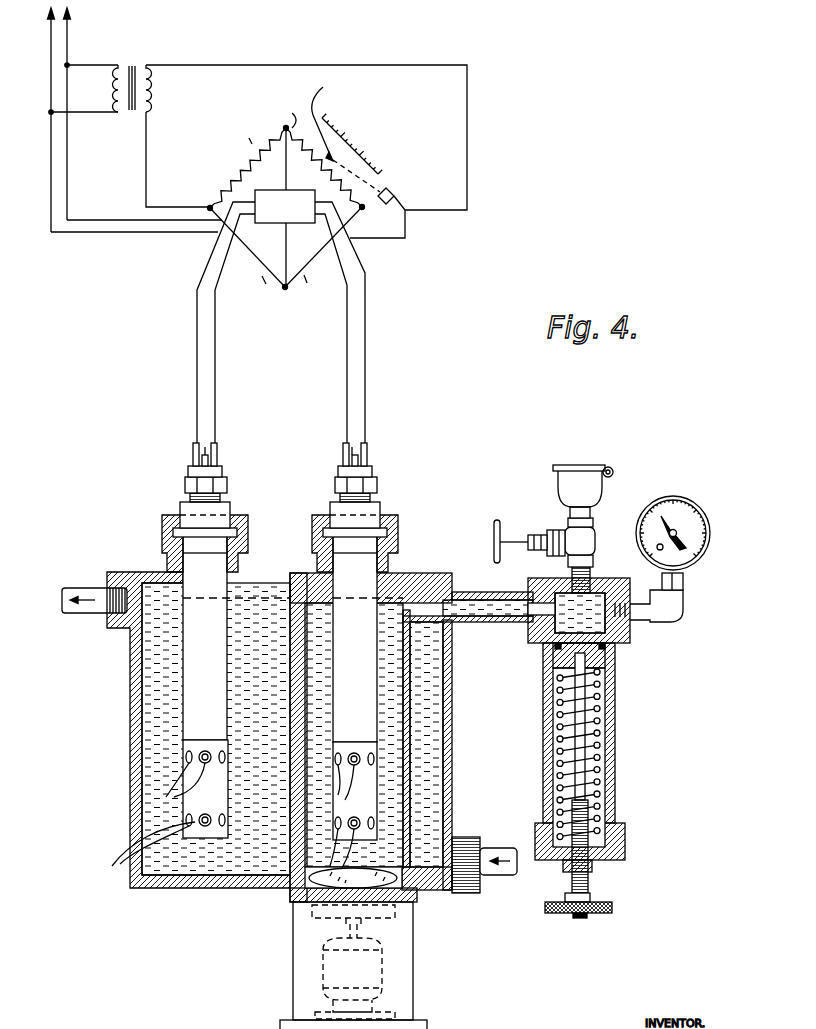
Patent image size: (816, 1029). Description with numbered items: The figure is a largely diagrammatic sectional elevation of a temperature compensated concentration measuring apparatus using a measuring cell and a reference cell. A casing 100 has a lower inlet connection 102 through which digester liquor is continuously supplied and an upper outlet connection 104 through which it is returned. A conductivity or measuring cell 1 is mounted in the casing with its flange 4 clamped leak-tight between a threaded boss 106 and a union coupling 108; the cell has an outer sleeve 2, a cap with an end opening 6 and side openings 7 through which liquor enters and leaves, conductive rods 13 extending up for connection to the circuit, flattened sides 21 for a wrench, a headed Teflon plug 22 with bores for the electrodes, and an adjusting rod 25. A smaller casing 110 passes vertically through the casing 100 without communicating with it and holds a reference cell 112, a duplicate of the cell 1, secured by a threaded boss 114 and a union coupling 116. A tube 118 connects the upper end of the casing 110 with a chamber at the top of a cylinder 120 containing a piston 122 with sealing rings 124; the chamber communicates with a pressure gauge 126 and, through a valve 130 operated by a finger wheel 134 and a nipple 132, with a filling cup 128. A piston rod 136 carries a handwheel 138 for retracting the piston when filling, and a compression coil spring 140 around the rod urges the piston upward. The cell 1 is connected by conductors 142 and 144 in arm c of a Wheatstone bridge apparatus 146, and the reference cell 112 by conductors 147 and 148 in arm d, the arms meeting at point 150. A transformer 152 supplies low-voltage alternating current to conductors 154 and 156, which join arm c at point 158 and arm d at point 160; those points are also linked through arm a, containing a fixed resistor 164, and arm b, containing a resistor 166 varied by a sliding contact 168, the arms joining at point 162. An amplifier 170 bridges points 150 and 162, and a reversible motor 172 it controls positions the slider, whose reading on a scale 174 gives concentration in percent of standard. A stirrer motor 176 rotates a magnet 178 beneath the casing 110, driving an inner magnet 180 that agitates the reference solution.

The measuring cell 1 is at (183, 718).
The outer sleeve 2 is at (292, 729).
The external flange 4 is at (240, 532).
The end opening 6 is at (250, 856).
The side openings 7 is at (263, 790).
The conductive rods 13 is at (193, 453).
The flattened sides 21 is at (185, 486).
The headed Teflon plug 22 is at (222, 470).
The rod 25 is at (212, 458).
The casing 100 is at (130, 768).
The inlet connection 102 is at (500, 878).
The outlet connection 104 is at (74, 612).
The threaded boss 106 is at (240, 563).
The union coupling 108 is at (245, 516).
The smaller casing 110 is at (292, 733).
The reference cell 112 is at (355, 772).
The threaded boss 114 is at (403, 563).
The union coupling 116 is at (402, 517).
The tube 118 is at (483, 622).
The cylinder 120 is at (615, 745).
The piston 122 is at (604, 664).
The sealing rings 124 is at (606, 648).
The pressure gauge 126 is at (689, 512).
The filling cup 128 is at (581, 465).
The valve 130 is at (594, 538).
The nipple 132 is at (590, 574).
The finger wheel 134 is at (498, 518).
The piston rod 136 is at (582, 784).
The handwheel 138 is at (613, 912).
The compression coil spring 140 is at (601, 717).
The conductor 142 is at (197, 400).
The conductor 144 is at (215, 400).
The Wheatstone bridge apparatus 146 is at (219, 243).
The conductor 147 is at (347, 400).
The conductor 148 is at (365, 400).
The junction point 150 is at (286, 290).
The transformer 152 is at (134, 63).
The conductor 154 is at (182, 160).
The conductor 156 is at (269, 63).
The junction point 158 is at (209, 206).
The junction point 160 is at (363, 210).
The junction point 162 is at (284, 127).
The fixed resistor 164 is at (240, 166).
The resistor 166 is at (302, 158).
The sliding contact 168 is at (341, 130).
The amplifier 170 is at (272, 224).
The reversible motor 172 is at (394, 195).
The scale 174 is at (336, 110).
The motor 176 is at (383, 981).
The magnet 178 is at (397, 917).
The magnet 180 is at (300, 903).